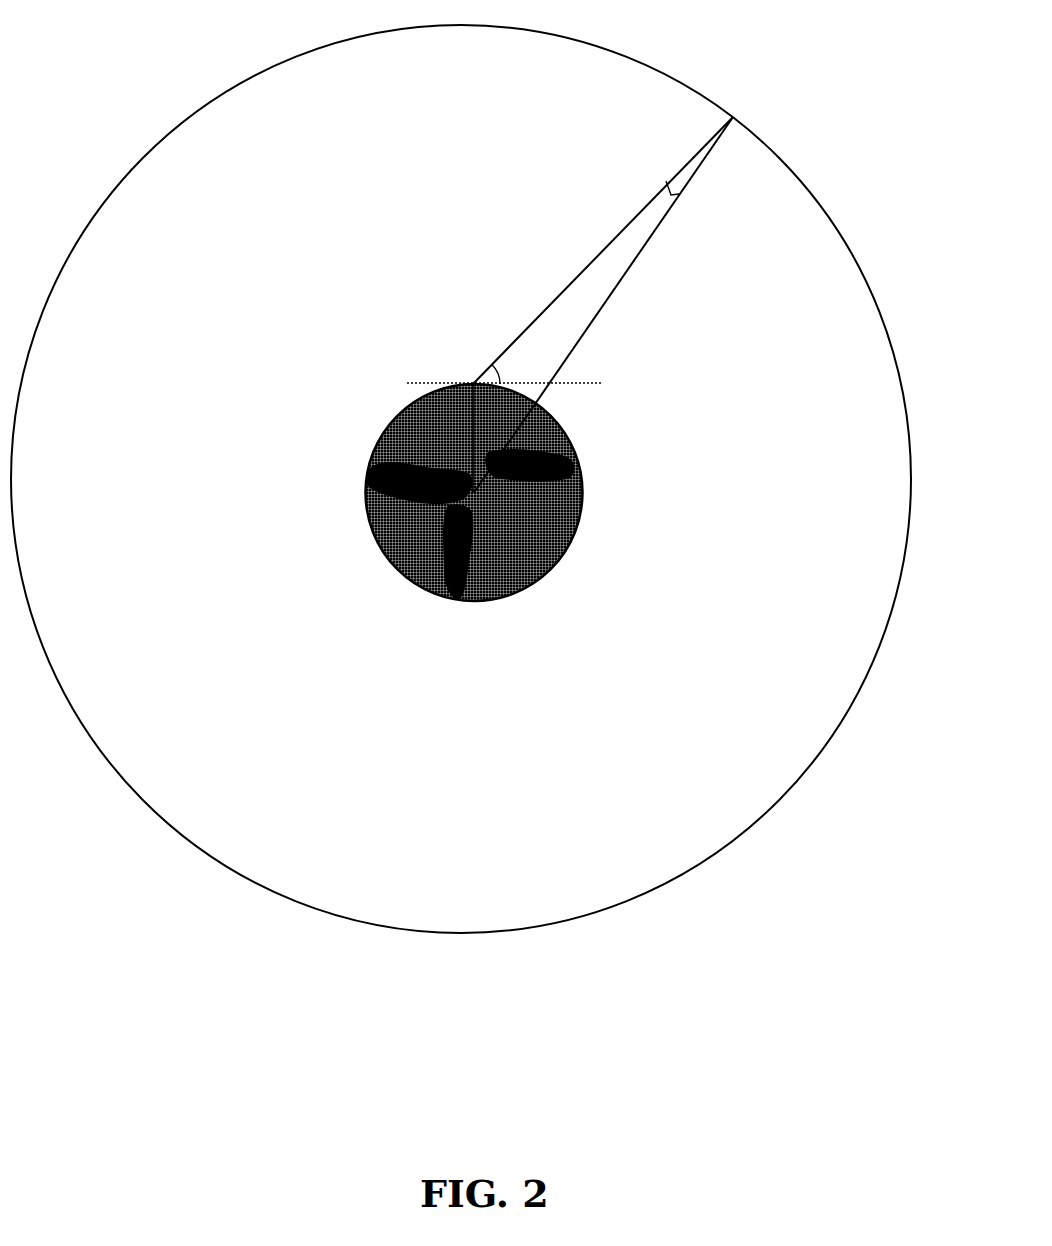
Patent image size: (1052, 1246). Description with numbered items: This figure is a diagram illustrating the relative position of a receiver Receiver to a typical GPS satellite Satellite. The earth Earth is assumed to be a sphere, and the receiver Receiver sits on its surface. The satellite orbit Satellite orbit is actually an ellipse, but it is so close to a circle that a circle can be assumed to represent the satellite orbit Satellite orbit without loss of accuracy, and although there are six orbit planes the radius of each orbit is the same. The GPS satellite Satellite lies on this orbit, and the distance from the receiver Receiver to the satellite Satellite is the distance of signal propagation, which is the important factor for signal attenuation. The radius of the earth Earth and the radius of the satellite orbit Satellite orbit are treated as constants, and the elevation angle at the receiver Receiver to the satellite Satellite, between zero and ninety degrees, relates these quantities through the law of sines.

The GPS satellite Satellite is at (747, 109).
The receiver Receiver is at (459, 377).
The satellite orbit Satellite orbit is at (784, 784).
The earth Earth is at (474, 492).